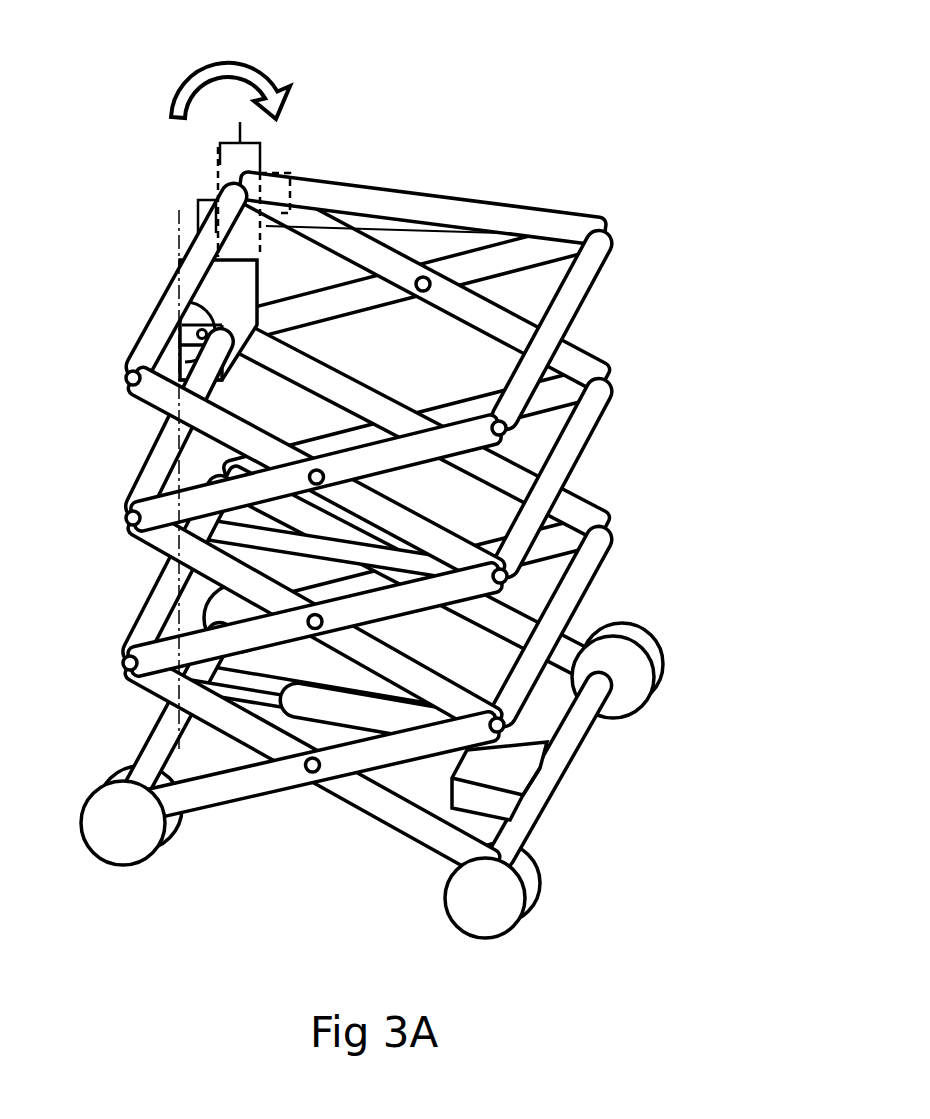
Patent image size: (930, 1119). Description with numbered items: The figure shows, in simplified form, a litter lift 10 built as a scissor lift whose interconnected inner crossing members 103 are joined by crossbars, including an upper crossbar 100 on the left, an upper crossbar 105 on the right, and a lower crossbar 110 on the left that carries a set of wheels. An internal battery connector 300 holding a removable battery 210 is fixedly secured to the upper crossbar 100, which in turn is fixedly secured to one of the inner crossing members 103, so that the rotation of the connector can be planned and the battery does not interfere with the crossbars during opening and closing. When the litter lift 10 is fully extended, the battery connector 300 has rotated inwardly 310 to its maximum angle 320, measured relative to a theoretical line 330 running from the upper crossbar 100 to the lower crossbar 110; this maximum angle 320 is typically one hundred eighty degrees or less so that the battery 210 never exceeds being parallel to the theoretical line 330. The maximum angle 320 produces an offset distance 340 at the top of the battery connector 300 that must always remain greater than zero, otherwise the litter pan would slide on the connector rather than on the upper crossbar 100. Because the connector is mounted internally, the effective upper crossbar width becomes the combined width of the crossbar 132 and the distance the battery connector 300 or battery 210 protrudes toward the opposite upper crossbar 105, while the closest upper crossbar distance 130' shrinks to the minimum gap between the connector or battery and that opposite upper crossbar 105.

The litter lift 10 is at (646, 573).
The upper crossbar 100 is at (147, 343).
The inner crossing members 103 is at (437, 540).
The upper crossbar 105 is at (565, 303).
The lower crossbar 110 is at (150, 741).
The closest upper crossbar distance 130' is at (489, 208).
The crossbar width/diameter 132 is at (208, 200).
The removable battery 210 is at (205, 387).
The internal battery connector 300 is at (222, 285).
The inward rotation 310 is at (280, 82).
The maximum angle 320 is at (180, 304).
The theoretical line 330 is at (179, 212).
The offset distance 340 is at (240, 122).